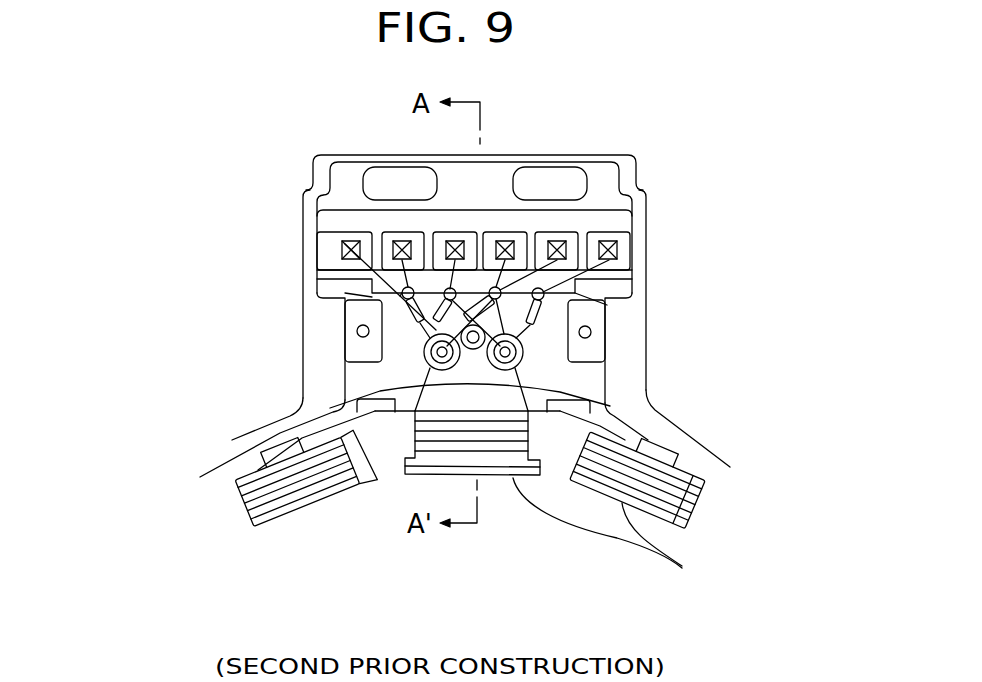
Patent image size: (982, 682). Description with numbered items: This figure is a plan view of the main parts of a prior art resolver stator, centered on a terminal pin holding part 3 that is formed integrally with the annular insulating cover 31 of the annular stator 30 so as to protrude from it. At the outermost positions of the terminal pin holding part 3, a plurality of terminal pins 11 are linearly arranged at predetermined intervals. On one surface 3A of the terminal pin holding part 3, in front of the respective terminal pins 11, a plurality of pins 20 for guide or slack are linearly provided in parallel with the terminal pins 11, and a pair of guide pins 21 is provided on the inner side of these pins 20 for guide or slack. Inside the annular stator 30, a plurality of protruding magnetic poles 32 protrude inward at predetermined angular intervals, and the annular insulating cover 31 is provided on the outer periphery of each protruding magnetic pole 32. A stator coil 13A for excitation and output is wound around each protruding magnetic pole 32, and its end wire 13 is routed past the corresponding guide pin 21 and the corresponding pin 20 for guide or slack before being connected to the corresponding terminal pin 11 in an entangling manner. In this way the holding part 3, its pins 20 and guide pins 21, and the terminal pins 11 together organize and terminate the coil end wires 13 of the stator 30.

The terminal pin holding part 3 is at (627, 305).
The one surface of the terminal pin holding part 3A is at (398, 362).
The terminal pin 11 is at (345, 244).
The end wire 13 is at (372, 299).
The stator coil 13A is at (690, 505).
The pin for guide or slack 20 is at (402, 294).
The guide pin 21 is at (428, 360).
The annular stator 30 is at (305, 385).
The annular insulating cover 31 is at (383, 478).
The protruding magnetic pole 32 is at (297, 523).